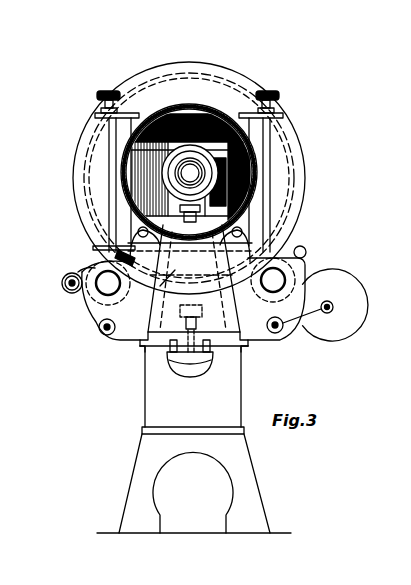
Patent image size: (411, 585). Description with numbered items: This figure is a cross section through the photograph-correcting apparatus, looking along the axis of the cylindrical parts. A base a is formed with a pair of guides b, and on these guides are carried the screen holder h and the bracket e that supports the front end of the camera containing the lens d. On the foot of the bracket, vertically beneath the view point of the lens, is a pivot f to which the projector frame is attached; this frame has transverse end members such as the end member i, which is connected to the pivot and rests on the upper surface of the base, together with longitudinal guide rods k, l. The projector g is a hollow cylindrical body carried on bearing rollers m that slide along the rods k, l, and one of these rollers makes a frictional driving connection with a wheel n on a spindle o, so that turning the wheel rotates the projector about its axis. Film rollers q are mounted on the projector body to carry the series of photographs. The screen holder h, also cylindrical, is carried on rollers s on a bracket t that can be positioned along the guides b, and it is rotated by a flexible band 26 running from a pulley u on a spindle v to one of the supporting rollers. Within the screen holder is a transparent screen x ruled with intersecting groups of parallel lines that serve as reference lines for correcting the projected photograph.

The projector g is at (178, 62).
The screen holder h is at (198, 111).
The transparent screen x is at (240, 156).
The lens d is at (188, 174).
The rollers q is at (110, 143).
The bracket e is at (228, 320).
The rollers s is at (233, 243).
The bracket t is at (160, 286).
The pivot f is at (210, 332).
The guides b is at (141, 347).
The base a is at (145, 397).
The longitudinal guide rod k is at (112, 270).
The flexible band 26 is at (100, 275).
The pulley u is at (61, 283).
The spindle v is at (67, 290).
The bearing rollers m is at (92, 297).
The transverse end member i is at (100, 316).
The longitudinal guide rod l is at (290, 270).
The wheel n is at (336, 330).
The spindle o is at (326, 313).